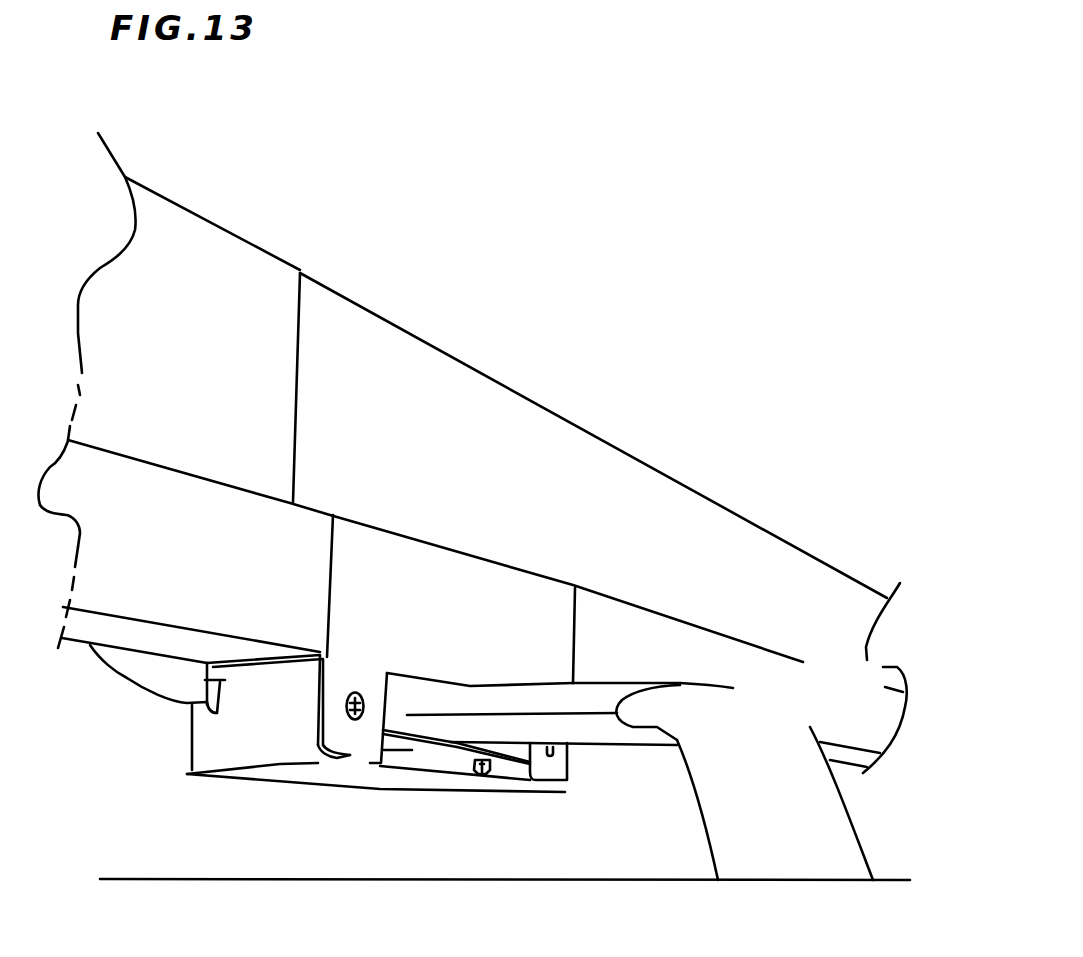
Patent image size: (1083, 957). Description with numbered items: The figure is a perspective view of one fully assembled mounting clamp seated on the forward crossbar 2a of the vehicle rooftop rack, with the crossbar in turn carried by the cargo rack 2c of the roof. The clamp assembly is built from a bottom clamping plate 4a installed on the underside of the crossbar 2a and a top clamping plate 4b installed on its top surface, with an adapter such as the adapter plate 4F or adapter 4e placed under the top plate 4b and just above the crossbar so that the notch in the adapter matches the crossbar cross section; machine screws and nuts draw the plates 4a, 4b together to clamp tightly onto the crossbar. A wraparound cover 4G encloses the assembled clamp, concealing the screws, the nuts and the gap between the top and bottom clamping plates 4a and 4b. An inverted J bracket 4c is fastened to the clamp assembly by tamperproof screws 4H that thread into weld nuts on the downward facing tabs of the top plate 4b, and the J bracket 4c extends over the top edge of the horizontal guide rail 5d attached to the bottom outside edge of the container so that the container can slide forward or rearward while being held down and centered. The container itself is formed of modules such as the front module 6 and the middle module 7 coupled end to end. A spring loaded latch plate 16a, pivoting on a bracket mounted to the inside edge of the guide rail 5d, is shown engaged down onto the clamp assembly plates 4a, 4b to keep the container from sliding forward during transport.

The middle module 7 is at (210, 228).
The front module 6 is at (498, 387).
The horizontal guide rail 5d is at (78, 636).
The latch plate 16a is at (131, 672).
The wraparound cover 4G is at (202, 746).
The tamperproof screw 4H is at (317, 707).
The top clamping plate 4b is at (313, 723).
The inverted J bracket 4c is at (350, 754).
The bottom clamping plate 4a is at (413, 753).
The adapter plate 4F is at (400, 690).
The adapter 4e is at (567, 763).
The forward crossbar 2a is at (640, 746).
The cargo rack 2c is at (631, 882).